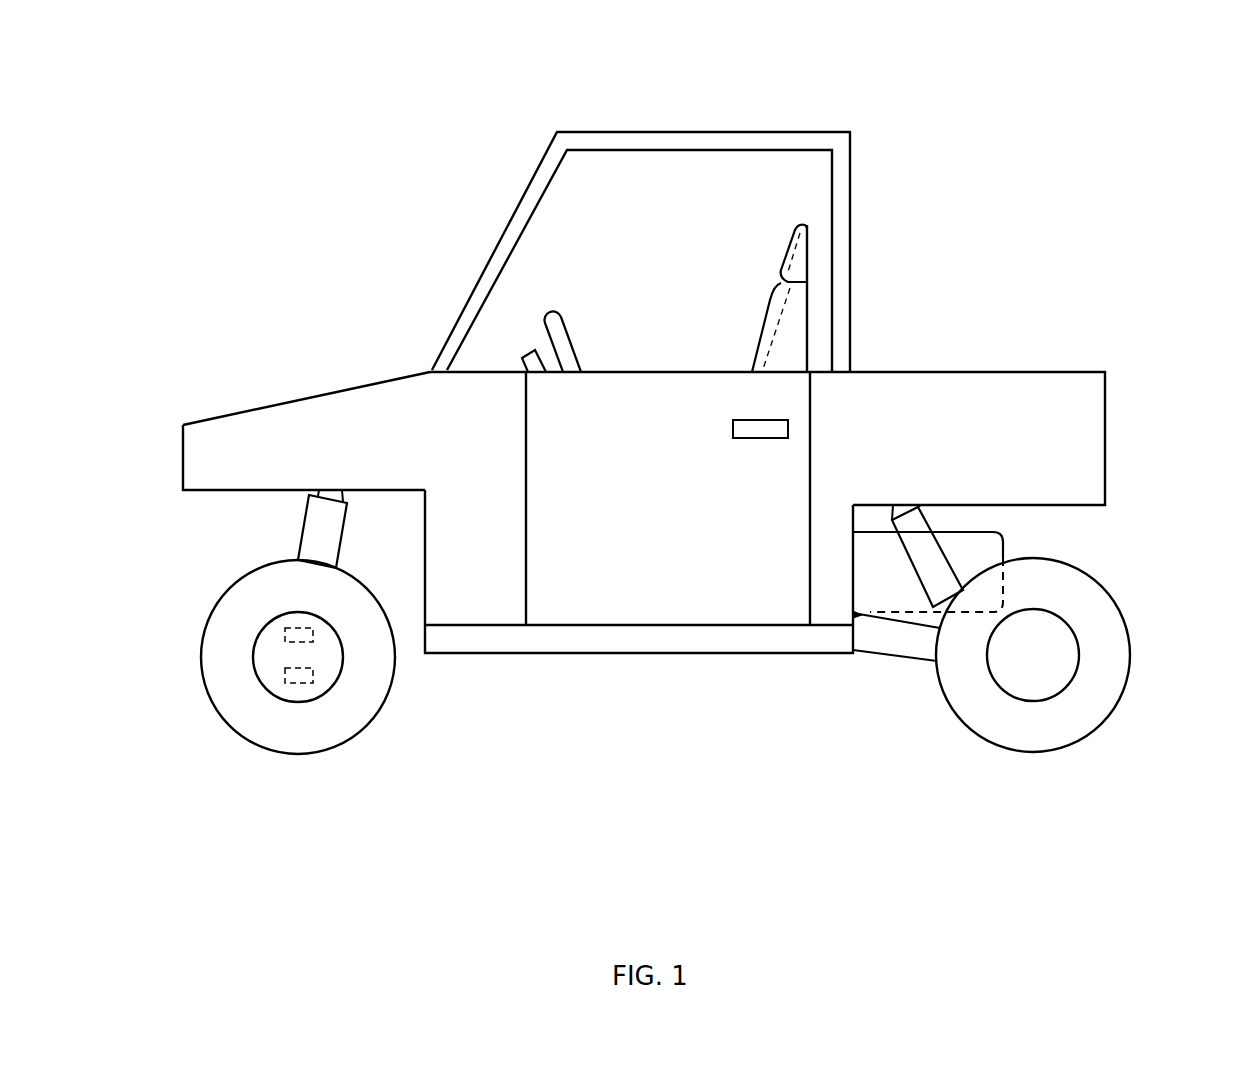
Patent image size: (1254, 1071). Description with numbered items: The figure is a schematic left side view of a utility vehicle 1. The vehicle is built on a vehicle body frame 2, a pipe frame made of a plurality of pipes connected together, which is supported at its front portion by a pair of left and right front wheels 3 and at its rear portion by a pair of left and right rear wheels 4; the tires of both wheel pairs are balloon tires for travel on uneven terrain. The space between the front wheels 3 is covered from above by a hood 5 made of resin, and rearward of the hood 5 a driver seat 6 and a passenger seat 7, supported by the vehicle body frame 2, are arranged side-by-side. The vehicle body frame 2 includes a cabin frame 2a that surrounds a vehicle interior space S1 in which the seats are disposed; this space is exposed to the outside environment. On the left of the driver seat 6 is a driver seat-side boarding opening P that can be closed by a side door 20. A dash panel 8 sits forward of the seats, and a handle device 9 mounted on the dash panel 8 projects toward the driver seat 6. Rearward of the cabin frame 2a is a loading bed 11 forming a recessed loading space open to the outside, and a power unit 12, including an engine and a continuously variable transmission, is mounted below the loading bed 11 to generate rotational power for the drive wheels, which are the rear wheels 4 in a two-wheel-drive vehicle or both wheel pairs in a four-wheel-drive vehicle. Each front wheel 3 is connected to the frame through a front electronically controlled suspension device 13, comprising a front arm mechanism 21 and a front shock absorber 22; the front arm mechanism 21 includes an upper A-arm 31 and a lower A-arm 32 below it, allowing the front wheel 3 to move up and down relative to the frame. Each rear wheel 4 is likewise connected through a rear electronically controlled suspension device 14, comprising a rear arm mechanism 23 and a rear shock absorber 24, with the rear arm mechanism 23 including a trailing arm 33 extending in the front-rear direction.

The utility vehicle 1 is at (350, 172).
The vehicle body frame 2 is at (525, 657).
The cabin frame 2a is at (533, 175).
The front wheels 3 is at (202, 647).
The rear wheels 4 is at (1130, 645).
The hood 5 is at (270, 407).
The driver seat 6 is at (765, 320).
The passenger seat 7 is at (783, 252).
The dash panel 8 is at (513, 368).
The handle device 9 is at (553, 318).
The loading bed 11 is at (1047, 372).
The power unit 12 is at (1004, 529).
The front electronically controlled suspension device 13 is at (392, 879).
The rear electronically controlled suspension device 14 is at (997, 829).
The side door 20 is at (623, 600).
The front arm mechanism 21 is at (316, 826).
The front shock absorber 22 is at (342, 540).
The rear arm mechanism 23 is at (898, 648).
The rear shock absorber 24 is at (943, 588).
The upper A-arm 31 is at (282, 635).
The lower A-arm 32 is at (298, 687).
The trailing arm 33 is at (872, 643).
The driver seat-side boarding opening P is at (682, 600).
The vehicle interior space S1 is at (666, 322).